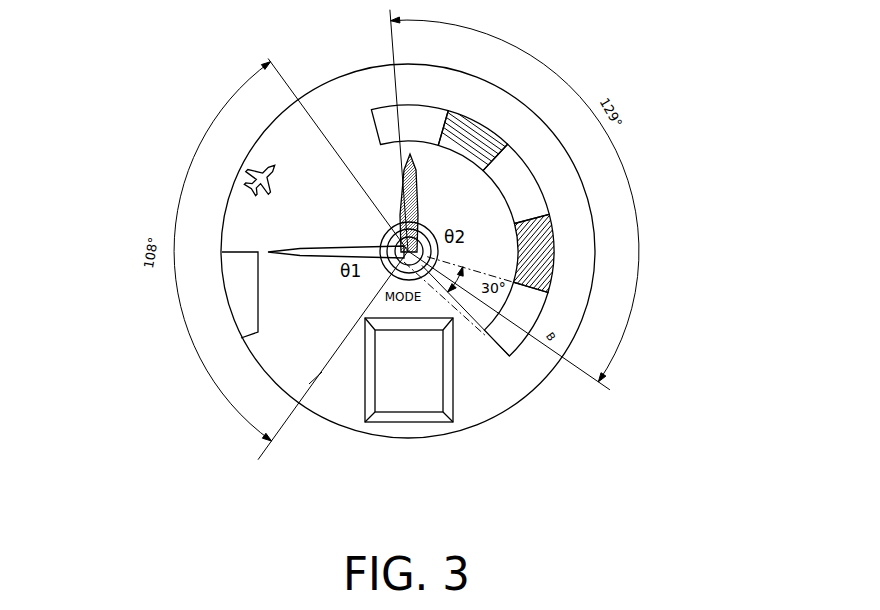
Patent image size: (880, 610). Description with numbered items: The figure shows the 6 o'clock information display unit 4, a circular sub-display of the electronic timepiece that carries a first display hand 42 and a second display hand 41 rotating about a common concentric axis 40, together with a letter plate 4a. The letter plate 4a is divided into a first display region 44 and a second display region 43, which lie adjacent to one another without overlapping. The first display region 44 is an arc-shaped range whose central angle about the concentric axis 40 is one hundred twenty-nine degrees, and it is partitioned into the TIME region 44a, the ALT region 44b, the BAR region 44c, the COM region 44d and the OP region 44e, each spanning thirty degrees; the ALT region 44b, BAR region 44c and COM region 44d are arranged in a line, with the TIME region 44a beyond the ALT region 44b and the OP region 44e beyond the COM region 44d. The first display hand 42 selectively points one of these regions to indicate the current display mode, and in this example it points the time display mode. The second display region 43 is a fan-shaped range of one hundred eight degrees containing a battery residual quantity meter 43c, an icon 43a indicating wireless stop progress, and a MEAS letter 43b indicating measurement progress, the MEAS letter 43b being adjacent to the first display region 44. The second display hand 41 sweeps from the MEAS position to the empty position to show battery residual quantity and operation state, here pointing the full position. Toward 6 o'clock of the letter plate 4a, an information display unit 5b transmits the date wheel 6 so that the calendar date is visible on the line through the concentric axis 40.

The 6 o'clock information display unit 4 is at (79, 64).
The letter plate 4a is at (322, 412).
The information display unit 5b is at (403, 420).
The date wheel 6 is at (428, 391).
The concentric axis 40 is at (398, 238).
The second display hand 41 is at (283, 249).
The first display hand 42 is at (418, 180).
The second display region 43 is at (95, 118).
The icon 43a is at (242, 188).
The MEAS letter 43b is at (290, 134).
The battery residual quantity meter 43c is at (243, 316).
The first display region 44 is at (713, 90).
The TIME region 44a is at (445, 108).
The ALT region 44b is at (507, 140).
The BAR region 44c is at (540, 200).
The COM region 44d is at (553, 242).
The OP region 44e is at (547, 295).